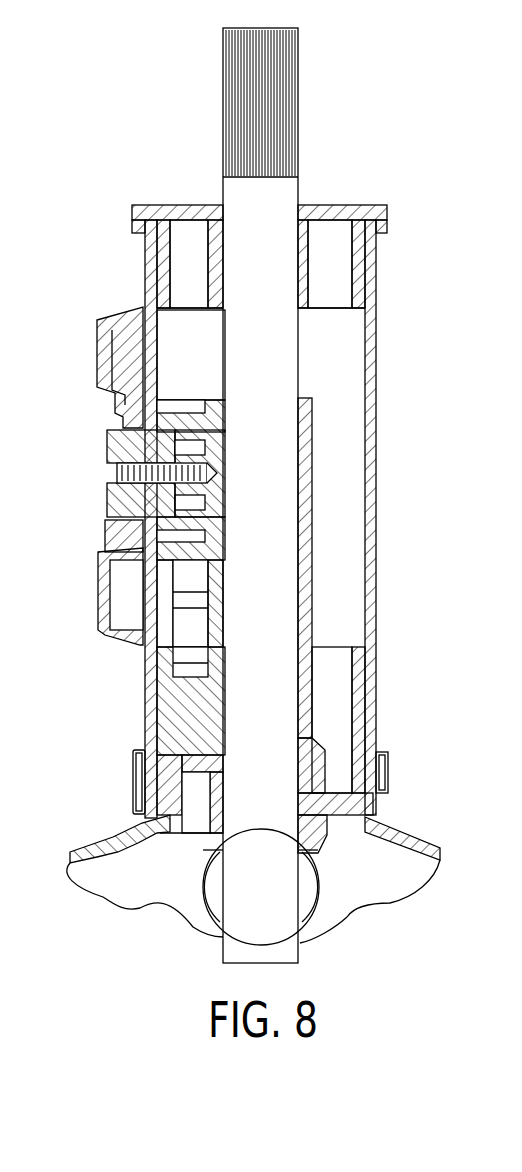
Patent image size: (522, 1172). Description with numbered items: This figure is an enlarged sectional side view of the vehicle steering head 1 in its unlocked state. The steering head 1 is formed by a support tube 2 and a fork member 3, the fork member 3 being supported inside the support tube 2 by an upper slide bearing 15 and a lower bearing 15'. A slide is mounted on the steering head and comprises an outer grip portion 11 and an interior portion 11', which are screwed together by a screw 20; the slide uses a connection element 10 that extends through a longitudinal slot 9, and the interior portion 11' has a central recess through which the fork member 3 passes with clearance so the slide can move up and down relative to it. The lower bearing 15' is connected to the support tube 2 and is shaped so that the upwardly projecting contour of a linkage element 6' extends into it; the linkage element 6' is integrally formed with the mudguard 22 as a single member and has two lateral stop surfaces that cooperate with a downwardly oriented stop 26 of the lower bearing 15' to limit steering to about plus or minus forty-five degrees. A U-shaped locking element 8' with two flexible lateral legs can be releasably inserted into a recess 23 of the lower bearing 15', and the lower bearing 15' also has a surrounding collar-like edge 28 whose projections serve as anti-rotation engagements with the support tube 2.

The steering head 1 is at (407, 795).
The support tube 2 is at (372, 358).
The fork member 3 is at (283, 193).
The linkage element 6' is at (191, 834).
The locking element 8' is at (207, 582).
The longitudinal slot 9 is at (148, 573).
The connection element 10 is at (140, 445).
The outer grip portion 11 is at (96, 367).
The interior portion 11' is at (337, 595).
The slide bearing 15 is at (360, 264).
The lower bearing 15' is at (370, 720).
The screw 20 is at (117, 468).
The mudguard 22 is at (103, 847).
The recess 23 is at (192, 695).
The stop 26 is at (143, 772).
The collar-like edge 28 is at (390, 777).